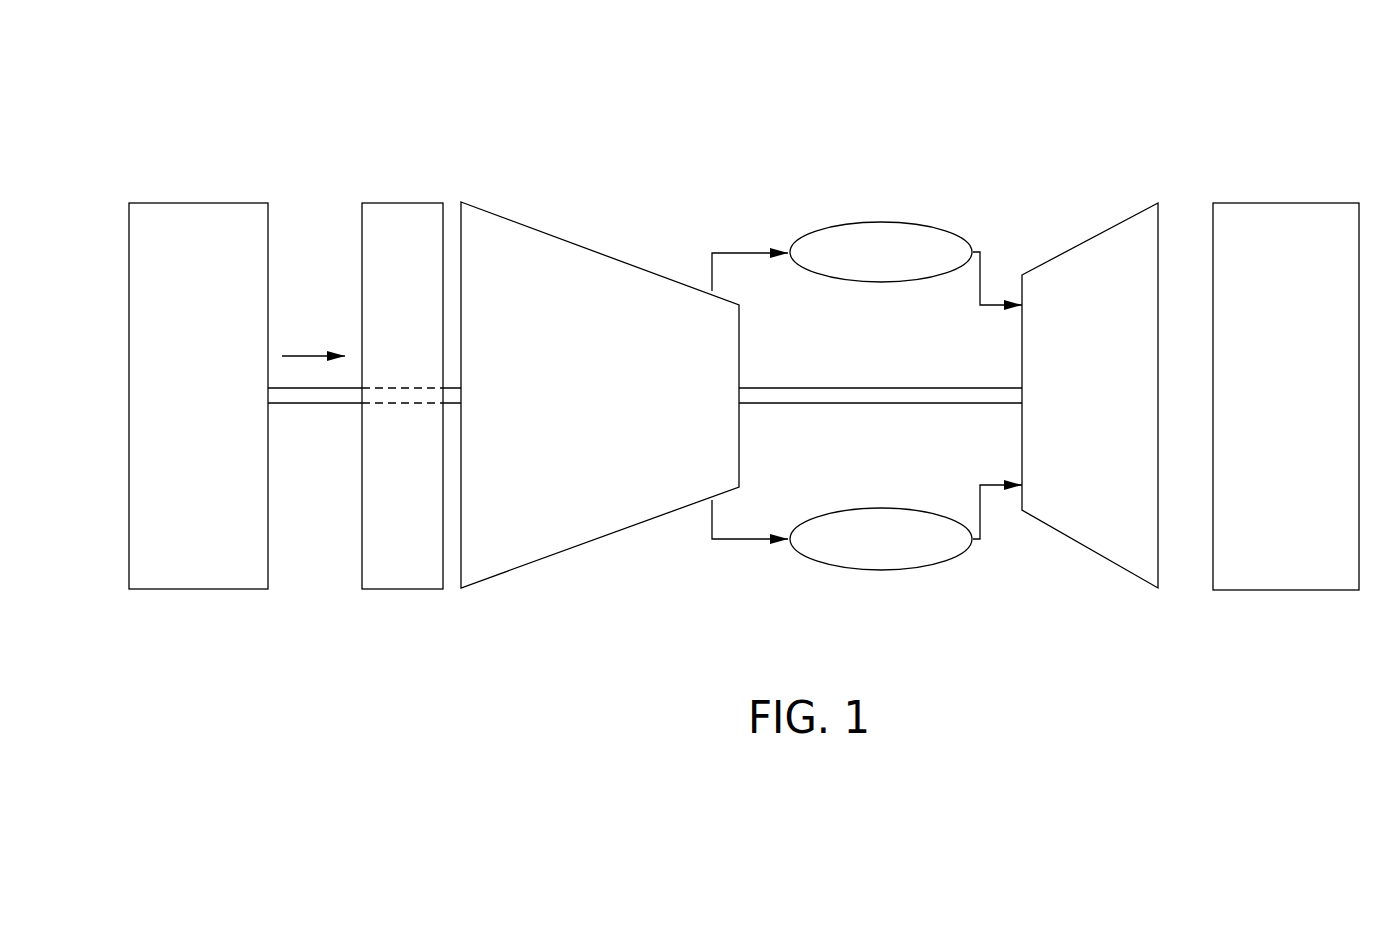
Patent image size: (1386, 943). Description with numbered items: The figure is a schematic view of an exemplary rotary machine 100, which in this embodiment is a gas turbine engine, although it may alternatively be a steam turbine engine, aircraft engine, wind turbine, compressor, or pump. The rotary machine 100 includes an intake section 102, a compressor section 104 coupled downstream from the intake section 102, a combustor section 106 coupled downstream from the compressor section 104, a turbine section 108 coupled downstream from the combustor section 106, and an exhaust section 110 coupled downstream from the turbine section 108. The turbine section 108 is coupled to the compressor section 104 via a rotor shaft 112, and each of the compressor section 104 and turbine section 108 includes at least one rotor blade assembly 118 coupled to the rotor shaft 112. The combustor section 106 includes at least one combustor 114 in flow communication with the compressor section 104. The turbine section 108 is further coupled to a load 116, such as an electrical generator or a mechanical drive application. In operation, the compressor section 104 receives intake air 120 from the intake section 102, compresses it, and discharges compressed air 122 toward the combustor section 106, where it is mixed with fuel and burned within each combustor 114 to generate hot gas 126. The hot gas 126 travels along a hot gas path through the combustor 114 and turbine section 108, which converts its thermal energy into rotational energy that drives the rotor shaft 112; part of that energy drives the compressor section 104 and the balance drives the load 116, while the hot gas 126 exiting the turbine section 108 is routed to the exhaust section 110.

The rotary machine 100 is at (995, 92).
The intake section 102 is at (414, 202).
The compressor section 104 is at (497, 213).
The combustor section 106 is at (940, 175).
The turbine section 108 is at (1127, 220).
The exhaust section 110 is at (1267, 203).
The rotor shaft 112 is at (887, 388).
The combustor 114 is at (898, 265).
The load 116 is at (177, 203).
The rotor blade assembly 118 is at (598, 217).
The intake air 120 is at (303, 355).
The compressed air 122 is at (736, 251).
The hot gas 126 is at (977, 285).